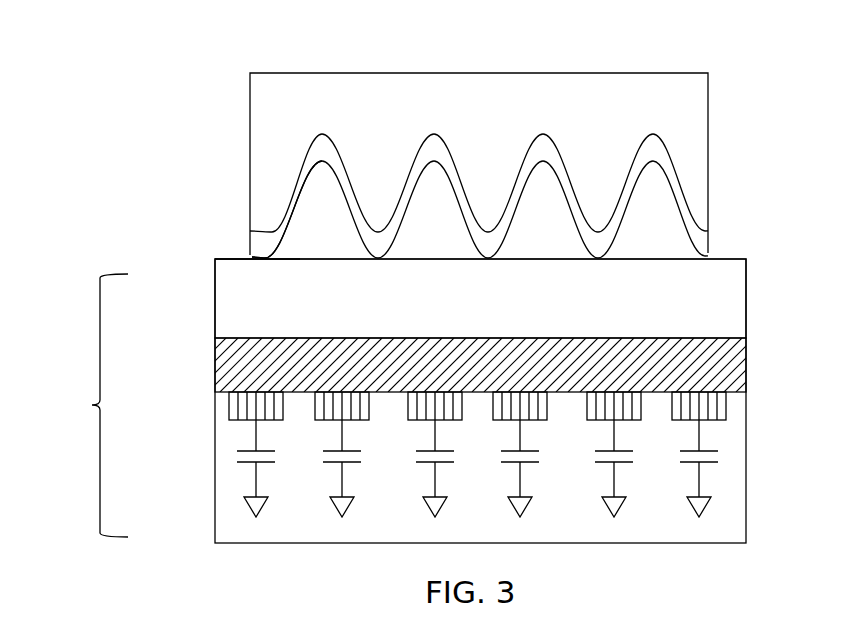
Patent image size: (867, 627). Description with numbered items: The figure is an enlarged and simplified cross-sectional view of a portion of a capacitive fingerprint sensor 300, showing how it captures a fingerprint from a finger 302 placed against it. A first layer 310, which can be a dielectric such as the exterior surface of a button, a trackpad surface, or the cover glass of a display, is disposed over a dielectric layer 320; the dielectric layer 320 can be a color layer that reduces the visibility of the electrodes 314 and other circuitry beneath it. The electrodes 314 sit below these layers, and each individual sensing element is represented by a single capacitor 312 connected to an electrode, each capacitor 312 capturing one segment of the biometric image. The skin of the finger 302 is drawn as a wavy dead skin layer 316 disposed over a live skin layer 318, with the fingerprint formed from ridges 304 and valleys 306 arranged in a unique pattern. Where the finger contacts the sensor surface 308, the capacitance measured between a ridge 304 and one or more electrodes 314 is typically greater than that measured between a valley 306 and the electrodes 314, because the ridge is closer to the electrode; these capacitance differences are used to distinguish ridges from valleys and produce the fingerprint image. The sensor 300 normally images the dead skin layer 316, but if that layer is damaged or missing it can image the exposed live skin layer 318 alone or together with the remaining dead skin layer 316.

The capacitive fingerprint sensor 300 is at (88, 405).
The finger 302 is at (292, 95).
The ridge 304 is at (246, 257).
The valley 306 is at (668, 159).
The platen surface 308 is at (747, 256).
The first layer 310 is at (747, 298).
The capacitor 312 is at (228, 458).
The electrodes 314 is at (229, 412).
The dead skin layer 316 is at (273, 242).
The live skin layer 318 is at (328, 145).
The dielectric layer 320 is at (747, 364).